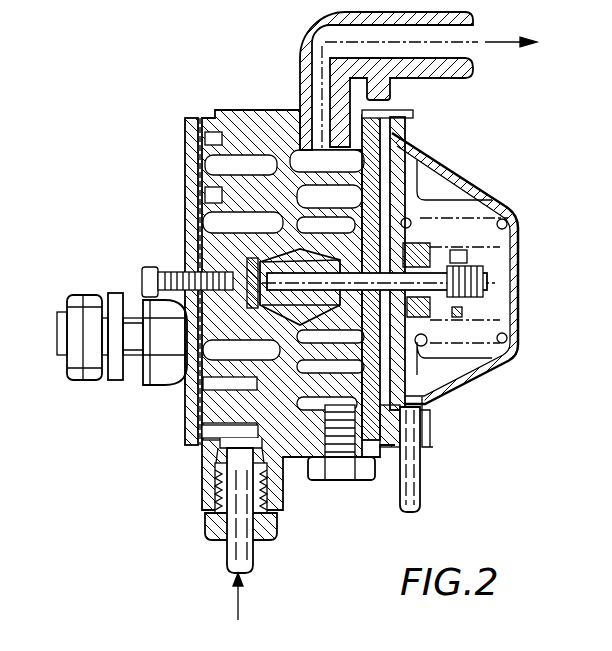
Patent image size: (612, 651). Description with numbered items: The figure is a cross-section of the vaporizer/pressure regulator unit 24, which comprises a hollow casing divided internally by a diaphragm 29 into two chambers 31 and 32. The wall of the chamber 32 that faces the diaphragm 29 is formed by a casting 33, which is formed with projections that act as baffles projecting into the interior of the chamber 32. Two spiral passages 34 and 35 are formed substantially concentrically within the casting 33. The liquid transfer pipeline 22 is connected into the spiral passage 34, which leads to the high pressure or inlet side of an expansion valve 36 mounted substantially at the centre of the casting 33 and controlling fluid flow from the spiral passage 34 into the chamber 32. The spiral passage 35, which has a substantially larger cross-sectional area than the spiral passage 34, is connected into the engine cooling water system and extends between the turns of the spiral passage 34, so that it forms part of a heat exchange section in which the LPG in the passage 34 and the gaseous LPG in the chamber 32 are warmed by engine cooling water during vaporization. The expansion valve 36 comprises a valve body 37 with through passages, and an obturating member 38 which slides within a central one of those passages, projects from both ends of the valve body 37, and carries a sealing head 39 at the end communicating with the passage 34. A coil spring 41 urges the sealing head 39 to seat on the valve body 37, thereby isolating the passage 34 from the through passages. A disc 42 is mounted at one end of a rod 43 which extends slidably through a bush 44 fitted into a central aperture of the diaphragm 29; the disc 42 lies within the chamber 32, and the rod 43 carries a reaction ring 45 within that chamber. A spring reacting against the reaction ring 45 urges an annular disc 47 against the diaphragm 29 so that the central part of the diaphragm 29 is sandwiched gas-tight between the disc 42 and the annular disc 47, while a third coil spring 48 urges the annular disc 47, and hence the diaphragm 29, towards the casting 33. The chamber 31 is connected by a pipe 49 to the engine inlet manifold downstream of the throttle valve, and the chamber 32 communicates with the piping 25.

The liquid transfer pipeline 22 is at (230, 556).
The vaporizer/pressure regulator unit 24 is at (272, 58).
The piping 25 is at (398, 70).
The diaphragm 29 is at (430, 410).
The chamber 31 is at (427, 375).
The chamber 32 is at (372, 160).
The casting 33 is at (210, 242).
The spiral passage 34 is at (200, 432).
The spiral passage 35 is at (218, 220).
The expansion valve 36 is at (280, 240).
The valve body 37 is at (285, 455).
The obturating member 38 is at (343, 462).
The sealing head 39 is at (192, 390).
The coil spring 41 is at (252, 265).
The disc 42 is at (418, 355).
The rod 43 is at (437, 287).
The bush 44 is at (453, 308).
The reaction ring 45 is at (510, 256).
The annular disc 47 is at (416, 188).
The third coil spring 48 is at (487, 192).
The pipe 49 is at (422, 480).